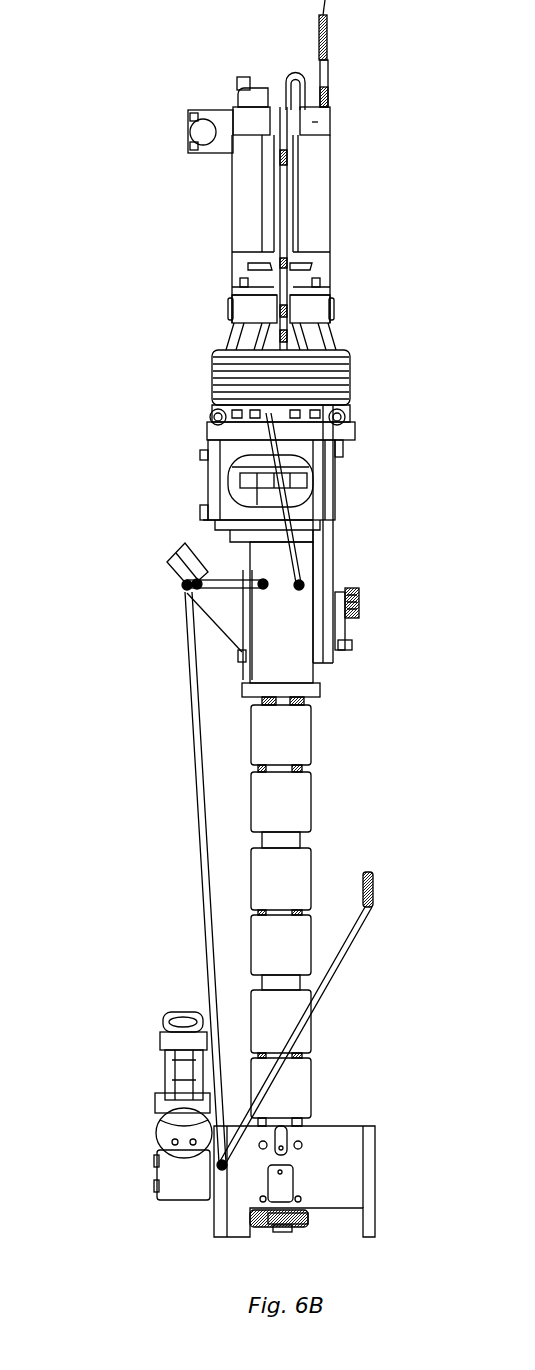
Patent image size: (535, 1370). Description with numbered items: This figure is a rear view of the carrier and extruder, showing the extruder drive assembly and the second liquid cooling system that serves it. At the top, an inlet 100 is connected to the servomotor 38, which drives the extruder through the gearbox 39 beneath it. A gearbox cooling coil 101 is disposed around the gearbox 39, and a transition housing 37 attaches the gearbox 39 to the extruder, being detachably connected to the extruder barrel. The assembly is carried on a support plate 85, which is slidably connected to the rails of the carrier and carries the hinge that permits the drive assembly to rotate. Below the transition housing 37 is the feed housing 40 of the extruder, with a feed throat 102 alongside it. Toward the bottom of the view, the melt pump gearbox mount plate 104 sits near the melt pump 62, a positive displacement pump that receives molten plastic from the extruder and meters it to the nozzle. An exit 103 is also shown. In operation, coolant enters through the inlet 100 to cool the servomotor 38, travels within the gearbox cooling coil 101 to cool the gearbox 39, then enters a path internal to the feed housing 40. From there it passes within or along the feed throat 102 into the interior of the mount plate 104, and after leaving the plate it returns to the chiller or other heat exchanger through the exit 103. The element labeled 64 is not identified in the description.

The inlet 100 is at (362, 0).
The servomotor 38 is at (248, 210).
The gearbox 39 is at (248, 305).
The gearbox cooling coil 101 is at (350, 361).
The transition housing 37 is at (328, 552).
The support plate 85 is at (363, 605).
The feed housing 40 is at (275, 632).
The feed throat 102 is at (172, 554).
The exit 103 is at (370, 868).
The housing 64 is at (180, 1172).
The melt pump gearbox mount plate 104 is at (222, 1228).
The melt pump 62 is at (281, 1180).